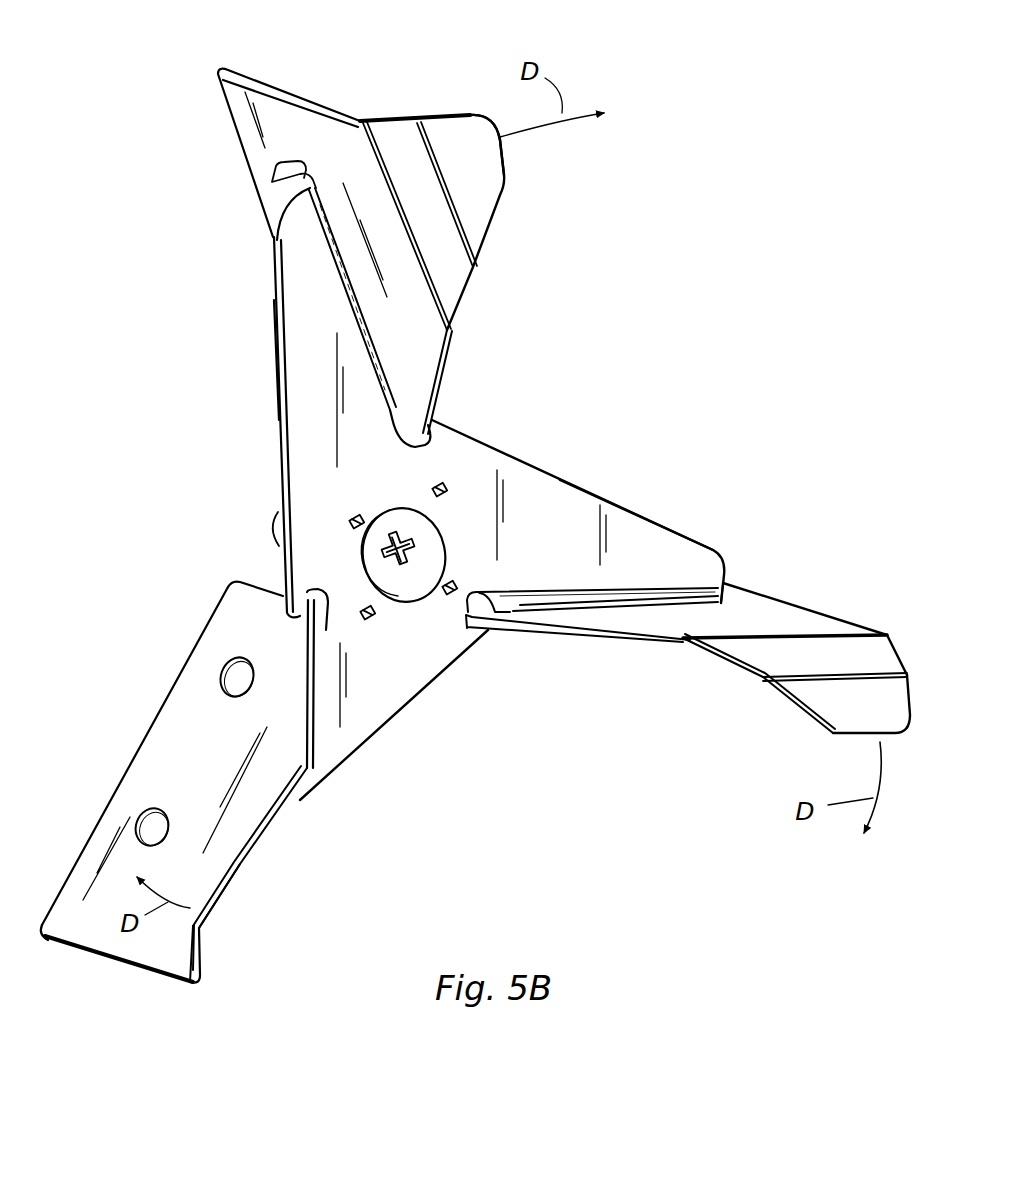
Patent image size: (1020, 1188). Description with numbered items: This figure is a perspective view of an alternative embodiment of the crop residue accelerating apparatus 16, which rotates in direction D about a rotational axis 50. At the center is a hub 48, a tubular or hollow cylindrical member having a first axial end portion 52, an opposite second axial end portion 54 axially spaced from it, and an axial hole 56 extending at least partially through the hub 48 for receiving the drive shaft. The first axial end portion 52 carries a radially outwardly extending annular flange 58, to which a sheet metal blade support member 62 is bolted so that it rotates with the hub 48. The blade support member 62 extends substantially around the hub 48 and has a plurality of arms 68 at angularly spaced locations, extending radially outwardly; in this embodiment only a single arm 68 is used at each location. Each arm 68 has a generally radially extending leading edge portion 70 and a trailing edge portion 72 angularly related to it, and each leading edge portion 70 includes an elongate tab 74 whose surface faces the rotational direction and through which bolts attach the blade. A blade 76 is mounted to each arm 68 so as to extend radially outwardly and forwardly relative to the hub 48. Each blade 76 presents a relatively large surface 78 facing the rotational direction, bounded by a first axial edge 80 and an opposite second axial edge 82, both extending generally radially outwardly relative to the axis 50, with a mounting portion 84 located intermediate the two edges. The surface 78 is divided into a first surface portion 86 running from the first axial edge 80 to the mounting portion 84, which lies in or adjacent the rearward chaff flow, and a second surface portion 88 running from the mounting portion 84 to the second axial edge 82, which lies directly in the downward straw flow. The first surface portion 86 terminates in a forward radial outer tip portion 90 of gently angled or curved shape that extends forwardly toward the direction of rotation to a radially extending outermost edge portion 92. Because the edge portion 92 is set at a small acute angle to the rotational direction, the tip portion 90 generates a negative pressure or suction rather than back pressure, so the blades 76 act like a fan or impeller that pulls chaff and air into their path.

The crop residue accelerating apparatus 16 is at (658, 917).
The central hub 48 is at (448, 526).
The rotational axis 50 is at (268, 510).
The first axial end portion 52 is at (407, 516).
The second axial end portion 54 is at (273, 530).
The axial hole 56 is at (422, 546).
The annular flange 58 is at (440, 525).
The blade support member 62 is at (680, 526).
The arm 68 is at (277, 320).
The leading edge portion 70 is at (383, 360).
The trailing edge portion 72 is at (273, 258).
The elongate tab 74 is at (277, 167).
The blade 76 is at (346, 97).
The surface 78 is at (183, 703).
The first axial edge 80 is at (440, 380).
The second axial edge 82 is at (230, 137).
The mounting portion 84 is at (333, 207).
The first surface portion 86 is at (183, 923).
The second surface portion 88 is at (70, 903).
The forward radial outer tip portion 90 is at (505, 175).
The outermost edge portion 92 is at (230, 883).